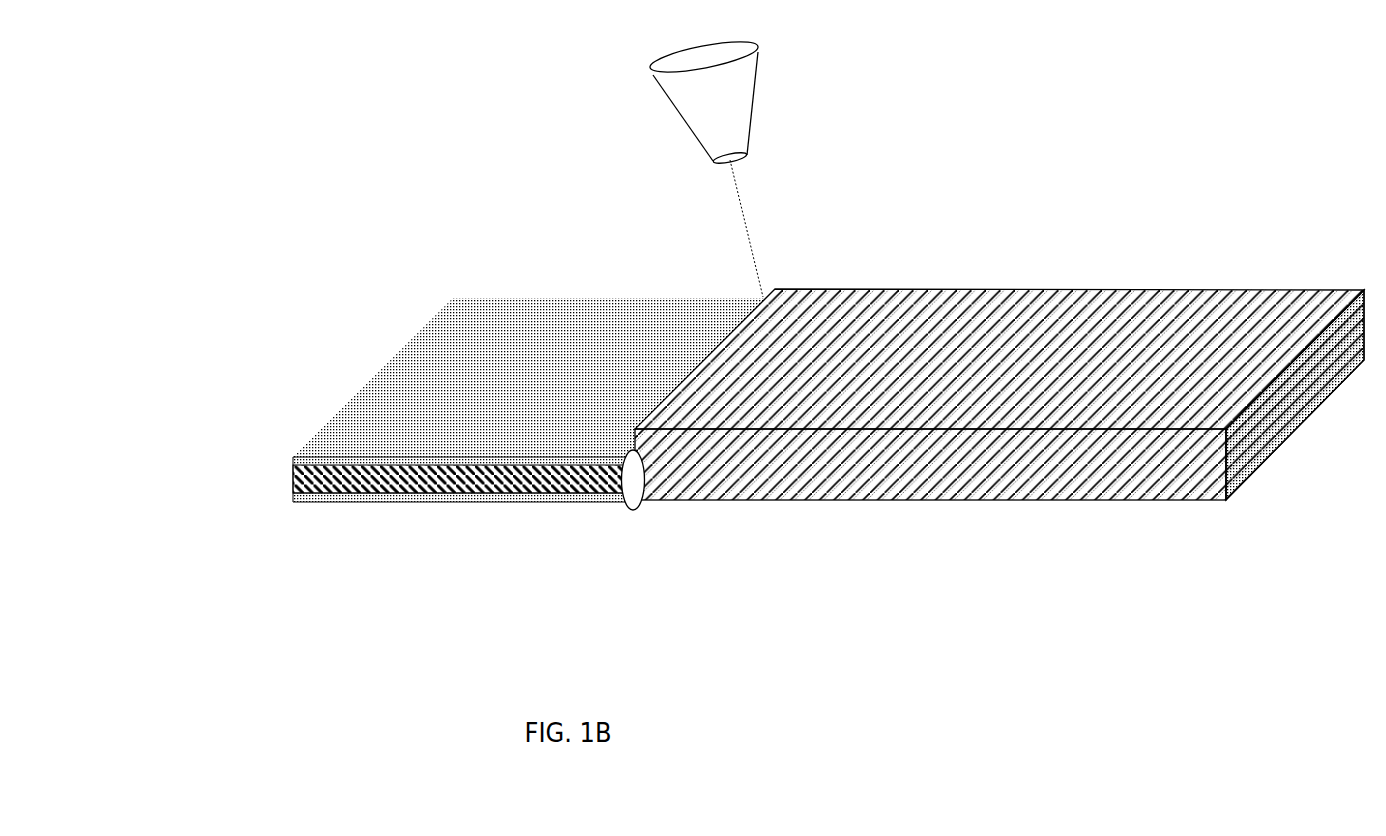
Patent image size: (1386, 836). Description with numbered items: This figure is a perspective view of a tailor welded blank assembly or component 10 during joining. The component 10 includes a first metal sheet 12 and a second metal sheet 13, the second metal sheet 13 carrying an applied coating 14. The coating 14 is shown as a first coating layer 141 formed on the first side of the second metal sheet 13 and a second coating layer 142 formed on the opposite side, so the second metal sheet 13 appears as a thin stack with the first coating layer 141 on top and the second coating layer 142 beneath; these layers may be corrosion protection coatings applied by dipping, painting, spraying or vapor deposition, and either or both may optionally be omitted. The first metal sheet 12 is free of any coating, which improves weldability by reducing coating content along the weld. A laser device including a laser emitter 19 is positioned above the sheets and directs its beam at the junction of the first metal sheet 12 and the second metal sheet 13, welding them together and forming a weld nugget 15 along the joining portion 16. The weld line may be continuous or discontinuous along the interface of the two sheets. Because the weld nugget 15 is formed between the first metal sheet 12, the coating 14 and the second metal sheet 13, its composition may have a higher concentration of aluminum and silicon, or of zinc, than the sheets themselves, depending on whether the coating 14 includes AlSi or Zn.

The tailor welded blank component 10 is at (556, 139).
The first metal sheet 12 is at (1007, 320).
The second metal sheet 13 is at (465, 347).
The coating 14 is at (385, 482).
The first coating layer 141 is at (327, 422).
The second coating layer 142 is at (327, 502).
The weld nugget 15 is at (629, 470).
The joining portion 16 is at (607, 523).
The laser emitter 19 is at (728, 166).